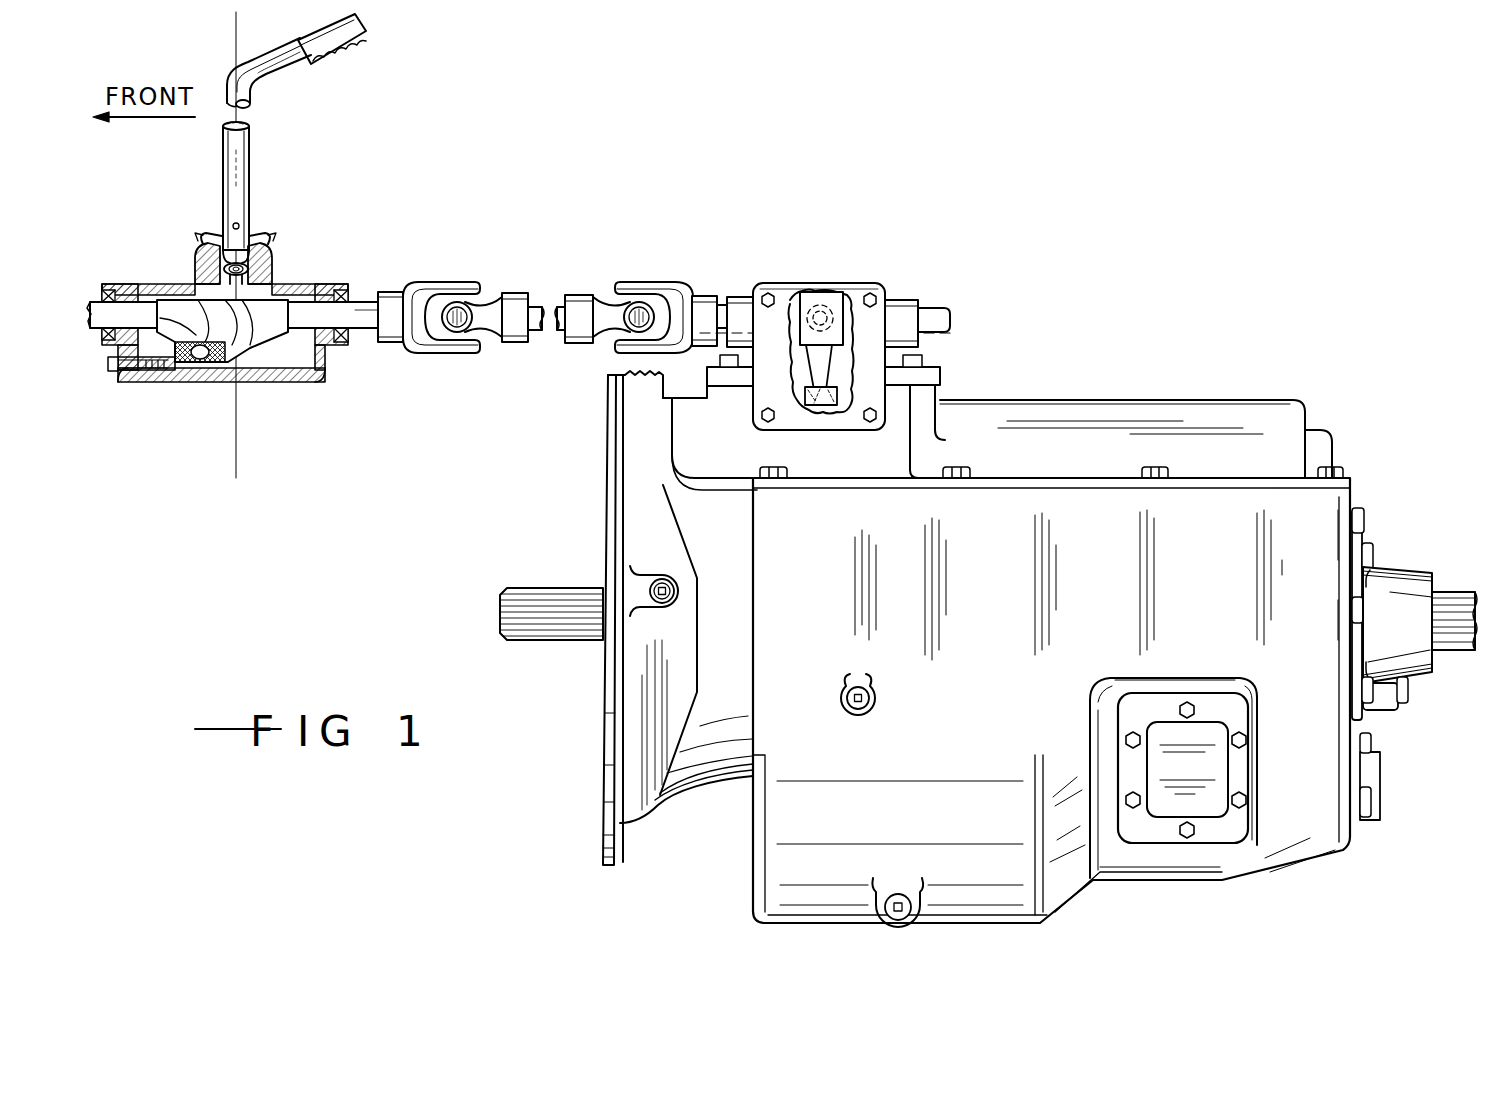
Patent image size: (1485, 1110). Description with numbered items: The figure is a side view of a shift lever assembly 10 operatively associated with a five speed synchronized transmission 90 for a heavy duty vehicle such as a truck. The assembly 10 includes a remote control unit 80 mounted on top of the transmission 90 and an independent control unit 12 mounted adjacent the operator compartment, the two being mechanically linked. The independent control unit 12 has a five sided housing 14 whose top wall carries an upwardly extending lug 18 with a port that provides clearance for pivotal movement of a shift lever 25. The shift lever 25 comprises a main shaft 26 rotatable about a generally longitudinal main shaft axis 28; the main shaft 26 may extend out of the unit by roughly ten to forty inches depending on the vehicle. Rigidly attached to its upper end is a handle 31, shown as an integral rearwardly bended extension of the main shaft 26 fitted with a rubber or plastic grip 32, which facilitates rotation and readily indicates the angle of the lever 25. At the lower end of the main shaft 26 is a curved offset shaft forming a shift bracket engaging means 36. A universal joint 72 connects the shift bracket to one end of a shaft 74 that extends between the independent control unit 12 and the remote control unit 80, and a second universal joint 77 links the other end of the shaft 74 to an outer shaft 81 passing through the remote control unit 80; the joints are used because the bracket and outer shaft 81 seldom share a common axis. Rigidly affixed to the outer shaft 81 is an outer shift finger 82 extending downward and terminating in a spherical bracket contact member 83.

The shift lever assembly 10 is at (430, 182).
The independent control unit 12 is at (174, 280).
The housing 14 is at (240, 382).
The lug 18 is at (270, 268).
The shift lever 25 is at (262, 145).
The main shaft 26 is at (223, 176).
The main shaft axis 28 is at (236, 37).
The handle 31 is at (283, 82).
The grip 32 is at (346, 38).
The shift bracket engaging means 36 is at (185, 340).
The universal joint 72 is at (460, 282).
The shaft 74 is at (546, 322).
The second universal joint 77 is at (672, 282).
The remote control unit 80 is at (846, 278).
The outer shaft 81 is at (722, 300).
The outer shift finger 82 is at (808, 367).
The spherical bracket contact member 83 is at (808, 420).
The transmission 90 is at (1198, 384).